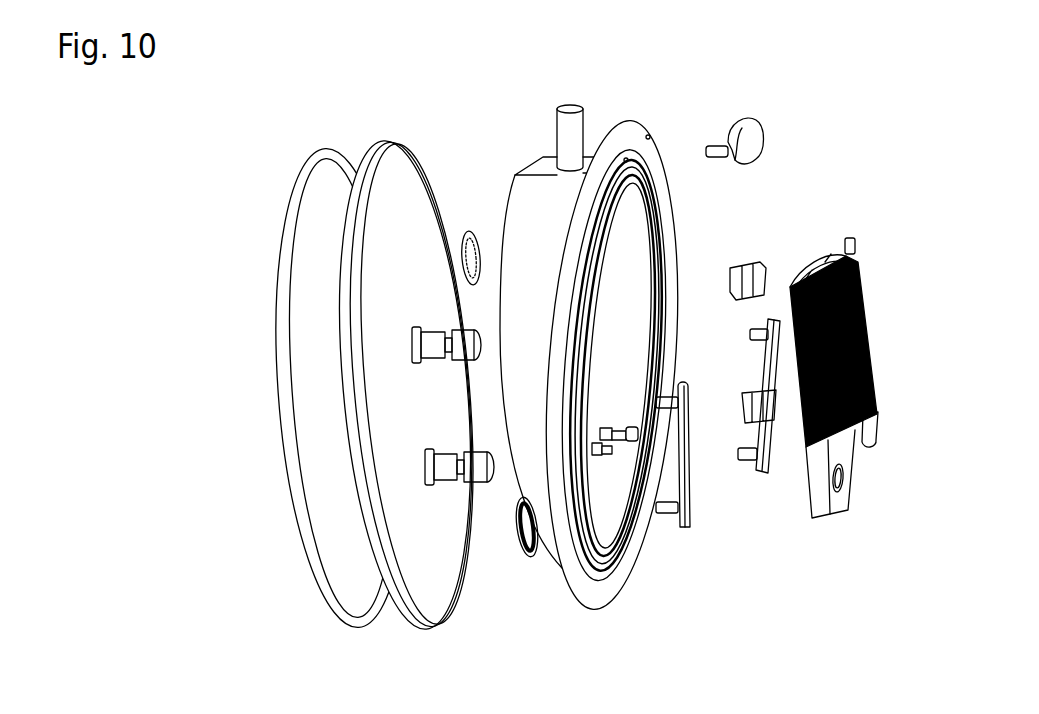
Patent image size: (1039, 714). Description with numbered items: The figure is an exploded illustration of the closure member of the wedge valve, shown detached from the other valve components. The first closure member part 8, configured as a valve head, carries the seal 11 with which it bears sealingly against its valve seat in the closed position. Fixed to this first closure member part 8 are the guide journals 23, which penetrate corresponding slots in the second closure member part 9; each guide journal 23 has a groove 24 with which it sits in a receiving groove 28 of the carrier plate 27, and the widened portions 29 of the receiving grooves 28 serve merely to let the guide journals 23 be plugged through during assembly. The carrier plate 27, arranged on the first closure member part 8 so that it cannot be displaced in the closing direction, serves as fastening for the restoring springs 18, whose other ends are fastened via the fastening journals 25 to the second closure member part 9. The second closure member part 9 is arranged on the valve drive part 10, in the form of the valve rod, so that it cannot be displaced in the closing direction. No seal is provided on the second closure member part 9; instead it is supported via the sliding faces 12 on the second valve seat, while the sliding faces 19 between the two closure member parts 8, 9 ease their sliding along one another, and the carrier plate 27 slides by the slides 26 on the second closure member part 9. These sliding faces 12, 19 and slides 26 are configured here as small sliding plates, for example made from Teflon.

The first closure member part 8 is at (388, 140).
The second closure member part 9 is at (646, 128).
The valve drive part 10 is at (572, 128).
The seal 11 is at (305, 150).
The sliding faces 12 is at (757, 135).
The restoring springs 18 is at (868, 347).
The sliding faces 19 is at (471, 230).
The guide journals 23 is at (432, 345).
The groove 24 is at (462, 352).
The fastening journals 25 is at (628, 540).
The slides 26 is at (763, 262).
The carrier plate 27 is at (840, 510).
The receiving grooves 28 is at (843, 472).
The widened portions 29 is at (848, 492).